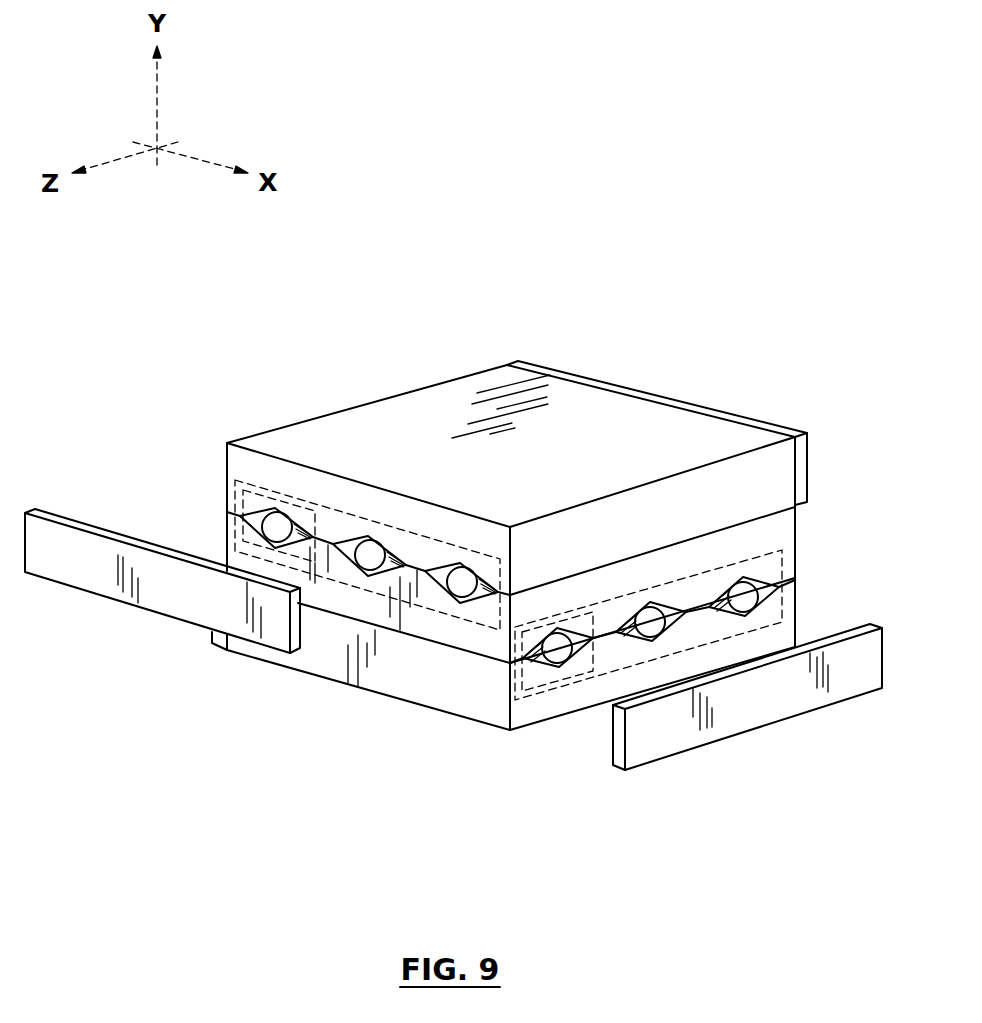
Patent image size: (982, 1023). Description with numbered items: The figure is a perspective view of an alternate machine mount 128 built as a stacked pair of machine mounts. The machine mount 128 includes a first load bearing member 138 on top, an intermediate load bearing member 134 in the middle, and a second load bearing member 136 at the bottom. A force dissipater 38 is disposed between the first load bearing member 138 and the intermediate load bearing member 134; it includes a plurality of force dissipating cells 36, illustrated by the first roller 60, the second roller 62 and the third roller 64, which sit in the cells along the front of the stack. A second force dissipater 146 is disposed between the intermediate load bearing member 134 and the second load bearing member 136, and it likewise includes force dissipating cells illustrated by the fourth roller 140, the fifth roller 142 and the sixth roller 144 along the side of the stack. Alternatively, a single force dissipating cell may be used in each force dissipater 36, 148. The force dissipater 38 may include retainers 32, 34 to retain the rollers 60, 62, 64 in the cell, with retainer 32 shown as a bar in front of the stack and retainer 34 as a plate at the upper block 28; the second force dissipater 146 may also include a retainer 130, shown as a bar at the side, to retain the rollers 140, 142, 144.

The upper block 28 is at (795, 435).
The retainer 32 is at (137, 612).
The retainer 34 is at (811, 459).
The force dissipating cell 36 is at (232, 545).
The force dissipater 38 is at (466, 547).
The first roller 60 is at (240, 512).
The second roller 62 is at (366, 538).
The third roller 64 is at (458, 563).
The machine mount 128 is at (593, 342).
The retainer 130 is at (205, 642).
The intermediate load bearing member 134 is at (799, 537).
The second load bearing member 136 is at (799, 605).
The first load bearing member 138 is at (483, 371).
The fourth roller 140 is at (580, 633).
The fifth roller 142 is at (672, 606).
The sixth roller 144 is at (768, 583).
The second force dissipater 146 is at (590, 688).
The force dissipater 148 is at (532, 690).